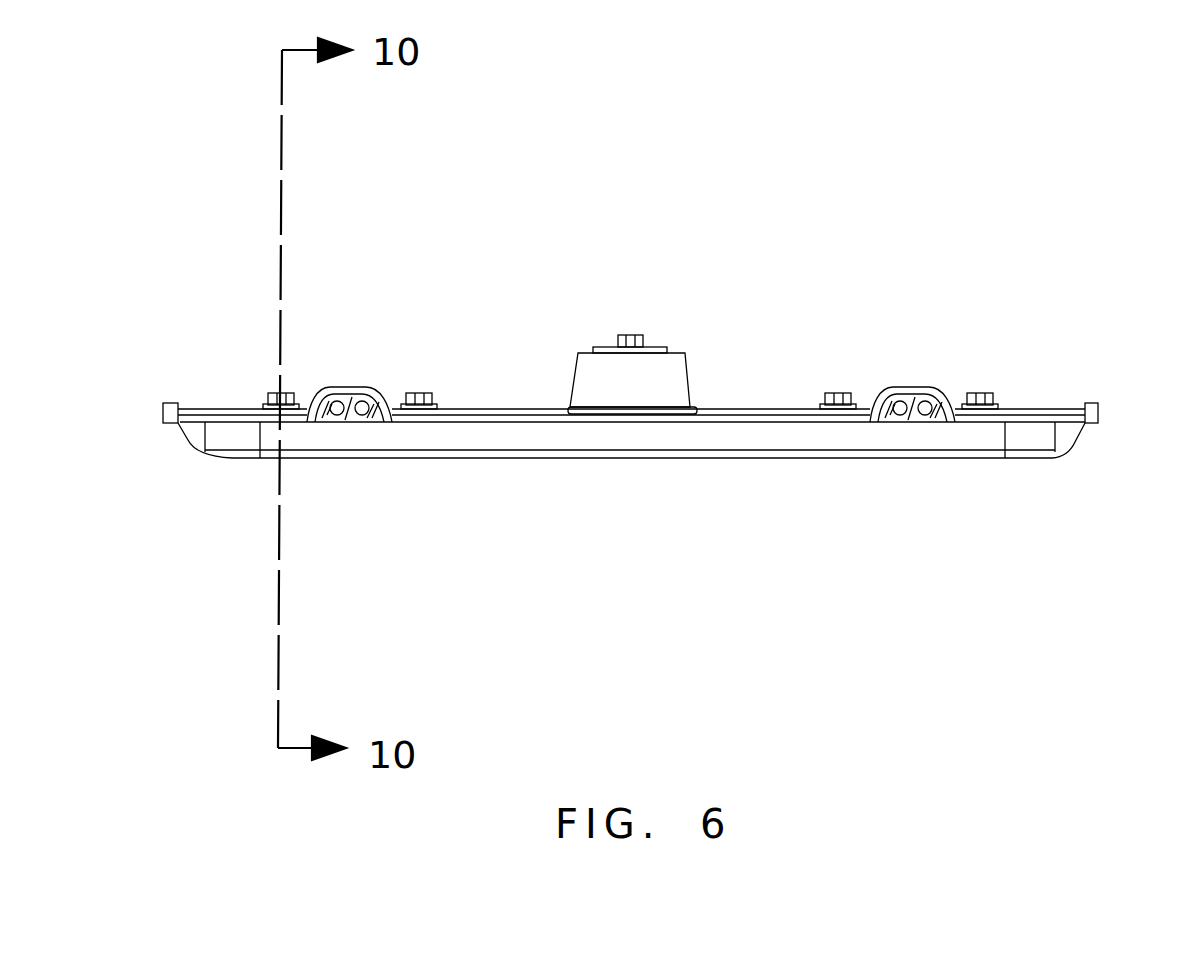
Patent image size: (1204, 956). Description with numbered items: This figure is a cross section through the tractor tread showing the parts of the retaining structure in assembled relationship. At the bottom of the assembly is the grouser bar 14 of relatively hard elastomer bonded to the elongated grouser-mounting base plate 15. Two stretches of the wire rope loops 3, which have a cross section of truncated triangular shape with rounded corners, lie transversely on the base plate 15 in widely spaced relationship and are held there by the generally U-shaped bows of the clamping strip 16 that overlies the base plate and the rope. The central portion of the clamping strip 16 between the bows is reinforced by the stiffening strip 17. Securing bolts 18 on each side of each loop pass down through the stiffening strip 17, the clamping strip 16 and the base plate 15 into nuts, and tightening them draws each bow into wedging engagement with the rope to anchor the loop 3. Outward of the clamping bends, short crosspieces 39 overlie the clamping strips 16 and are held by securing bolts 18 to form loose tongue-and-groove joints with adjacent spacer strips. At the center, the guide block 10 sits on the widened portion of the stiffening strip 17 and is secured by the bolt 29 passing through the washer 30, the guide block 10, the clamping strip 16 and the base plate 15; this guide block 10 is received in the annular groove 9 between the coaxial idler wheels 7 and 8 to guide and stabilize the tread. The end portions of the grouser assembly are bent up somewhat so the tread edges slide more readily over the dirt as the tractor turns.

The wire rope loop 3 is at (358, 425).
The idler wheel 7 is at (630, 630).
The idler wheel 8 is at (418, 195).
The annular groove 9 is at (347, 127).
The guide block 10 is at (665, 378).
The grouser bar 14 is at (825, 437).
The grouser-mounting base plate 15 is at (167, 425).
The clamping strip 16 is at (167, 407).
The stiffening strip 17 is at (478, 409).
The securing bolt 18 is at (273, 391).
The bolt 29 is at (618, 337).
The washer 30 is at (655, 345).
The crosspiece 39 is at (258, 407).